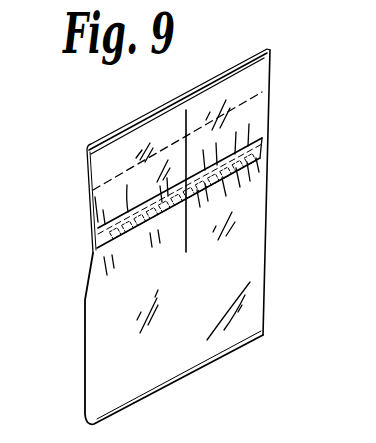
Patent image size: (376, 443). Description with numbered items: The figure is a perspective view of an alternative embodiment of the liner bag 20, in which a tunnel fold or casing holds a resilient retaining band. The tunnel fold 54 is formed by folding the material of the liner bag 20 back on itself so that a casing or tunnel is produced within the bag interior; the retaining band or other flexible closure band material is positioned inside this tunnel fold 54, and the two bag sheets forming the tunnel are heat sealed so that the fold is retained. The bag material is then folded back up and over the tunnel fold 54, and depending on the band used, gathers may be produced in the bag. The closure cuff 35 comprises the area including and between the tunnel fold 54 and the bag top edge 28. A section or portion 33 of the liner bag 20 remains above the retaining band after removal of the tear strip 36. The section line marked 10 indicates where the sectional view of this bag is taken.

The liner bag 20 is at (278, 229).
The bag top edge 28 is at (228, 68).
The section or portion of liner bag 33 is at (279, 93).
The closure cuff 35 is at (80, 148).
The tear strip 36 is at (262, 90).
The tunnel fold 54 is at (261, 146).
The section line 10 is at (160, 137).